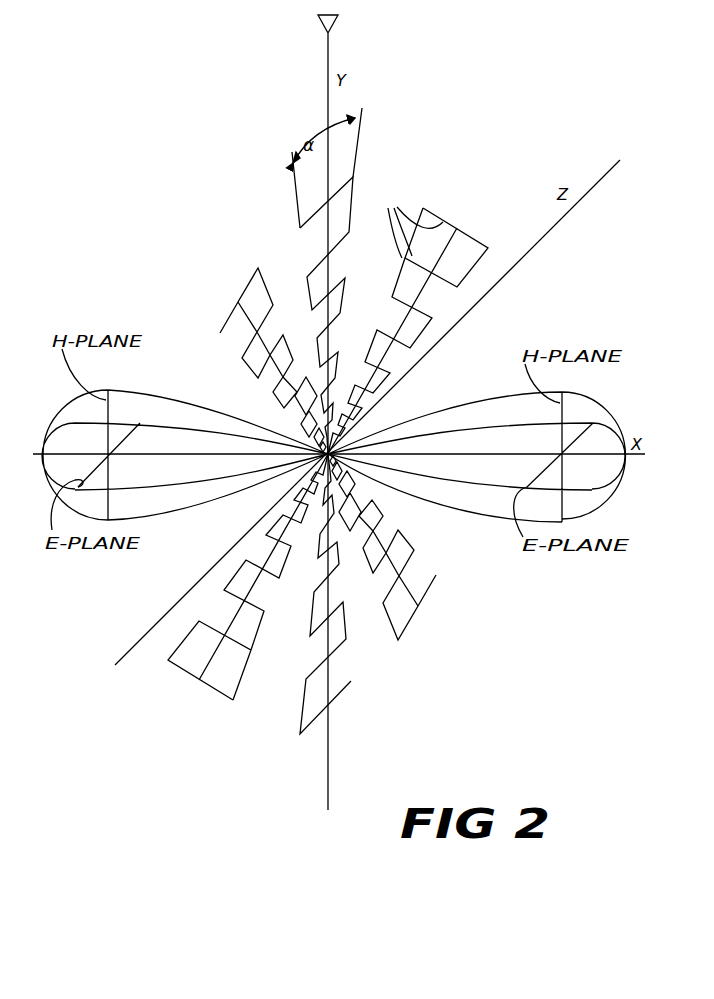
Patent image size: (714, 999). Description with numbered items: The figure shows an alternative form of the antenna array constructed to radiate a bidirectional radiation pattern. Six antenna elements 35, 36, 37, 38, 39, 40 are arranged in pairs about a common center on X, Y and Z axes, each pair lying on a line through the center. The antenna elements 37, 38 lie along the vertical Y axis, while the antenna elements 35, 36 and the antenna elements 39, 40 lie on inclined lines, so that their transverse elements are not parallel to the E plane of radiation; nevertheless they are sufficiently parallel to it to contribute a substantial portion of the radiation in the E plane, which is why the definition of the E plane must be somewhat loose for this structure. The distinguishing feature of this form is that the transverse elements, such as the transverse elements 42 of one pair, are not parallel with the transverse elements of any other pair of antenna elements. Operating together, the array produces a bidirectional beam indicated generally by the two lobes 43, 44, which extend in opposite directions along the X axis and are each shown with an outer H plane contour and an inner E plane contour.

The antenna element 35 is at (233, 305).
The antenna element 36 is at (417, 620).
The antenna element 37 is at (313, 209).
The antenna element 38 is at (333, 707).
The antenna element 39 is at (446, 215).
The antenna element 40 is at (182, 684).
The transverse elements 42 is at (411, 222).
The lobe 43 is at (428, 420).
The lobe 44 is at (168, 415).